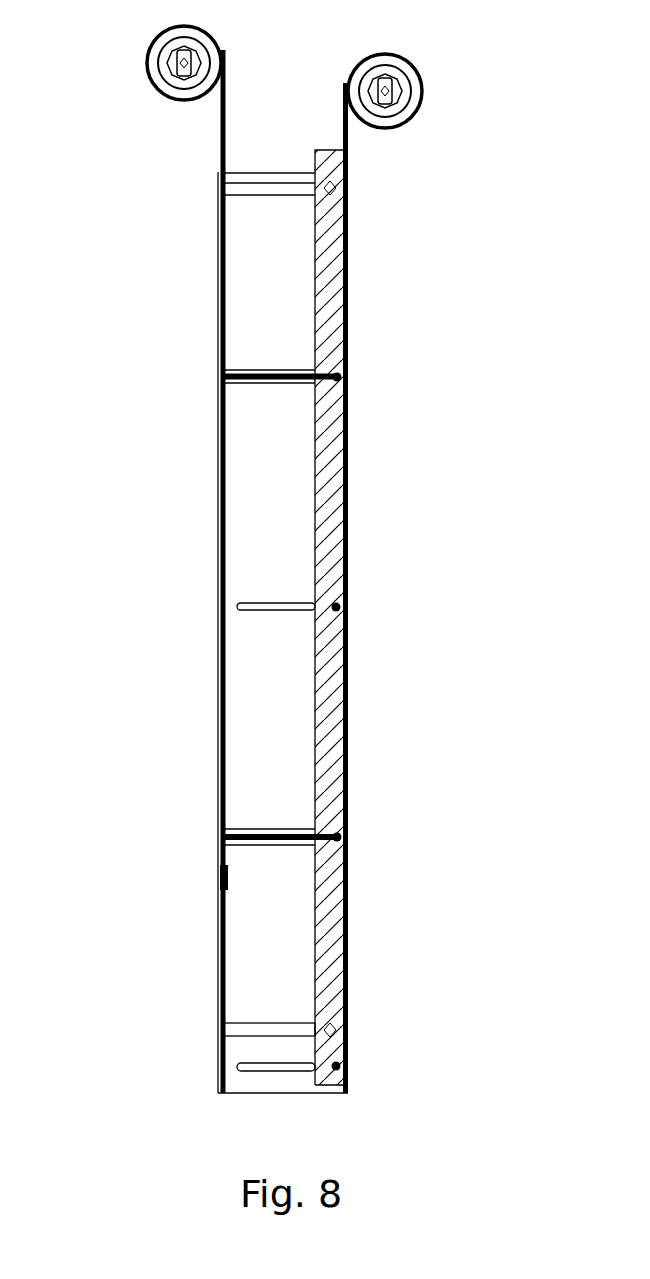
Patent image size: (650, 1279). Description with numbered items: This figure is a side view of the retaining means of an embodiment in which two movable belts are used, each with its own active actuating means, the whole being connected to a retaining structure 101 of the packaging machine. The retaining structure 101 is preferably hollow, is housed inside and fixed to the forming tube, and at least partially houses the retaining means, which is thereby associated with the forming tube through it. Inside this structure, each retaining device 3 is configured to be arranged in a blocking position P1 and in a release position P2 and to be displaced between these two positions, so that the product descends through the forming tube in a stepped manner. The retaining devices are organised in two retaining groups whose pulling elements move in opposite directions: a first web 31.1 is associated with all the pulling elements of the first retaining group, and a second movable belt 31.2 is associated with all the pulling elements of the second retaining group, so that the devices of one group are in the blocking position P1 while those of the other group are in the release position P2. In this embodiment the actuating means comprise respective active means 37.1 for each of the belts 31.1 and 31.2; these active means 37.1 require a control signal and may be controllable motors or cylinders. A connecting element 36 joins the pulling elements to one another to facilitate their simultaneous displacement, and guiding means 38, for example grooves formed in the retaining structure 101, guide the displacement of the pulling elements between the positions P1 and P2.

The active means 37.1 is at (168, 62).
The first web 31.1 is at (218, 132).
The second movable belt 31.2 is at (343, 125).
The connecting element 36 is at (325, 300).
The guiding means 38 is at (288, 603).
The retaining device 3 is at (270, 825).
The retaining structure 101 is at (252, 985).
The release position P2 is at (368, 610).
The blocking position P1 is at (362, 837).